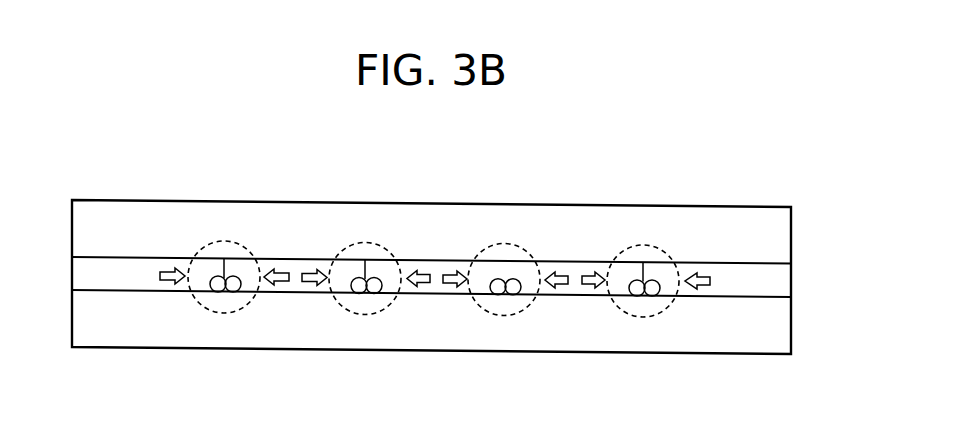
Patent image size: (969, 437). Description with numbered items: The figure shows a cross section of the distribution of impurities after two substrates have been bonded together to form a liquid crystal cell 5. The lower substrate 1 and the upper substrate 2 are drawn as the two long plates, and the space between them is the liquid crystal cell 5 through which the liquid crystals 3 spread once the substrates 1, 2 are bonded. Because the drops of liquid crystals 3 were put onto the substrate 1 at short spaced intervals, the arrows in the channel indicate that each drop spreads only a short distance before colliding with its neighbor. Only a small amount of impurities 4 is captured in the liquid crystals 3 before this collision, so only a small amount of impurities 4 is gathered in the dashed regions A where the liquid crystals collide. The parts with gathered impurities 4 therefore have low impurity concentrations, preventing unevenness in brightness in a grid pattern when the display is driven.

The substrate 1 is at (735, 345).
The substrate 2 is at (710, 218).
The liquid crystals 3 is at (118, 275).
The impurities 4 is at (508, 265).
The liquid crystal cell 5 is at (796, 178).
The regions A is at (223, 240).